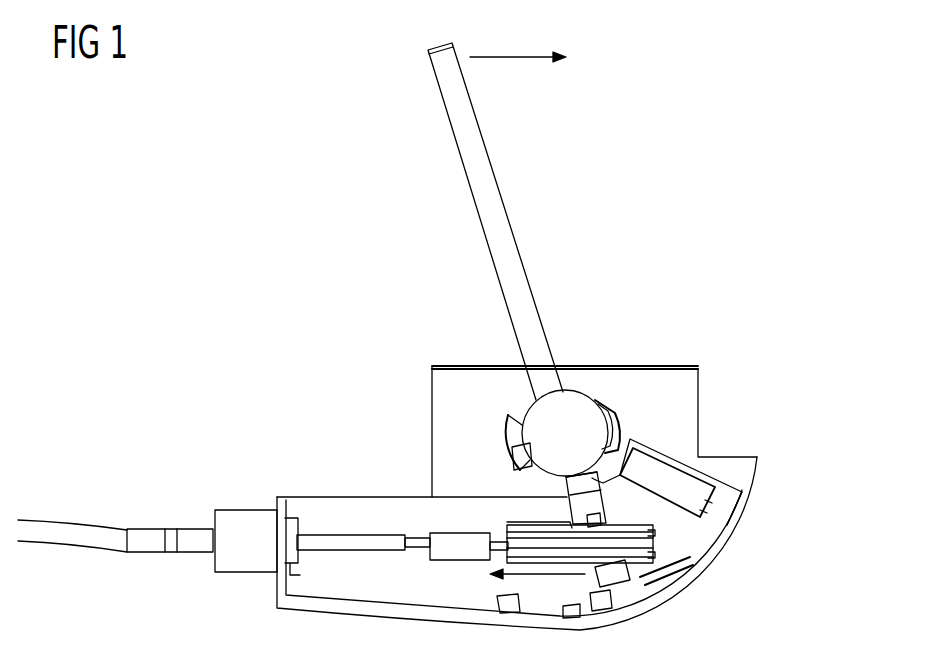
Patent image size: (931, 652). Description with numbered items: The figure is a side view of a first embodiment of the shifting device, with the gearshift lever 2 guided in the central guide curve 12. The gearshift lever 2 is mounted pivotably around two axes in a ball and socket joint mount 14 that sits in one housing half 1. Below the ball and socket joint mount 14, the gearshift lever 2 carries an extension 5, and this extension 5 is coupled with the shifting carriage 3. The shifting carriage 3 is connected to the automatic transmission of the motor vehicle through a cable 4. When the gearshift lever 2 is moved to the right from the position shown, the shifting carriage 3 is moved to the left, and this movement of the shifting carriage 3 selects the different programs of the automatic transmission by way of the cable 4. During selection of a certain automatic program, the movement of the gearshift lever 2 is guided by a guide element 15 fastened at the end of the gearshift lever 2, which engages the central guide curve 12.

The housing half 1 is at (457, 413).
The gearshift lever 2 is at (475, 125).
The shifting carriage 3 is at (640, 560).
The cable 4 is at (450, 542).
The extension 5 is at (605, 453).
The central guide curve 12 is at (710, 528).
The ball and socket joint mount 14 is at (575, 423).
The guide element 15 is at (677, 493).